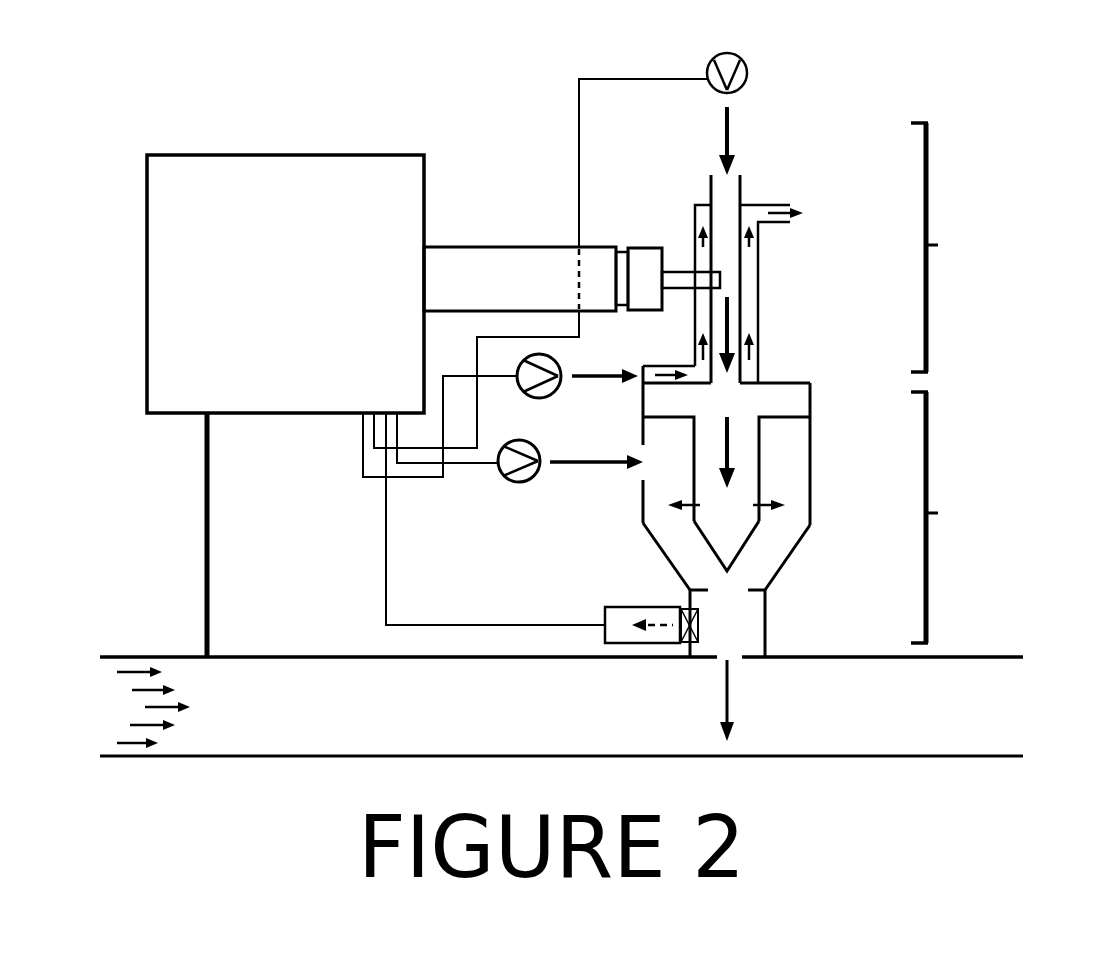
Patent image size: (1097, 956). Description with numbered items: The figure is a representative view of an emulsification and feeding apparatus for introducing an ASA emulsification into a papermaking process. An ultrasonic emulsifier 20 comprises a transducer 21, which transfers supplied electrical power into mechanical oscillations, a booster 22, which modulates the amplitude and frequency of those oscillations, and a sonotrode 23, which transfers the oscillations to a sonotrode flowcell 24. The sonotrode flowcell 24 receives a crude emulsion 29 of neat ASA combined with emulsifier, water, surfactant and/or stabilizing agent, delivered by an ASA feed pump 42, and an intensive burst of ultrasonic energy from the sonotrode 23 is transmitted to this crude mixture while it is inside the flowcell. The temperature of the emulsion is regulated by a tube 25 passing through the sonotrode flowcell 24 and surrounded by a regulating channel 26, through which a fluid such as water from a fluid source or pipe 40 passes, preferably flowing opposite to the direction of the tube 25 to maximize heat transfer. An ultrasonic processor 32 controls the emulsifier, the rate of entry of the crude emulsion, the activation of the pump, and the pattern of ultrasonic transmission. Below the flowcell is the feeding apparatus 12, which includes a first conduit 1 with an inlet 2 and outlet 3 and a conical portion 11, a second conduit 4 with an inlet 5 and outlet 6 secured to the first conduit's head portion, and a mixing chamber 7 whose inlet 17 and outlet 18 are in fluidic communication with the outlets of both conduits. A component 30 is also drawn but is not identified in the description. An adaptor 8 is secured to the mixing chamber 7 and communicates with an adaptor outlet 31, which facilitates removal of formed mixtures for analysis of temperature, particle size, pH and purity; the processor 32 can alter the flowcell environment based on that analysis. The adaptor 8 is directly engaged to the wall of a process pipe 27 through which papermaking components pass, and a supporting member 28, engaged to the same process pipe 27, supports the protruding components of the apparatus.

The first conduit 1 is at (731, 400).
The first conduit inlet 2 is at (731, 385).
The first conduit outlet 3 is at (767, 495).
The second conduit 4 is at (797, 488).
The second conduit inlet 5 is at (650, 468).
The second conduit outlet 6 is at (773, 545).
The mixing chamber 7 is at (740, 635).
The adaptor 8 is at (766, 625).
The conical portion 11 is at (733, 543).
The feeding apparatus 12 is at (956, 517).
The mixing chamber inlet 17 is at (673, 542).
The mixing chamber outlet 18 is at (717, 658).
The ultrasonic emulsifier 20 is at (955, 247).
The transducer 21 is at (482, 277).
The booster 22 is at (527, 265).
The sonotrode 23 is at (688, 272).
The sonotrode flowcell 24 is at (728, 243).
The tube 25 is at (730, 208).
The regulating channel 26 is at (750, 300).
The process pipe 27 is at (561, 706).
The supporting member 28 is at (202, 557).
The crude emulsion 29 is at (730, 140).
The pump 30 is at (500, 468).
The adaptor outlet 31 is at (680, 628).
The ultrasonic processor 32 is at (285, 284).
The fluid source or pipe 40 is at (545, 386).
The ASA feed pump 42 is at (708, 66).